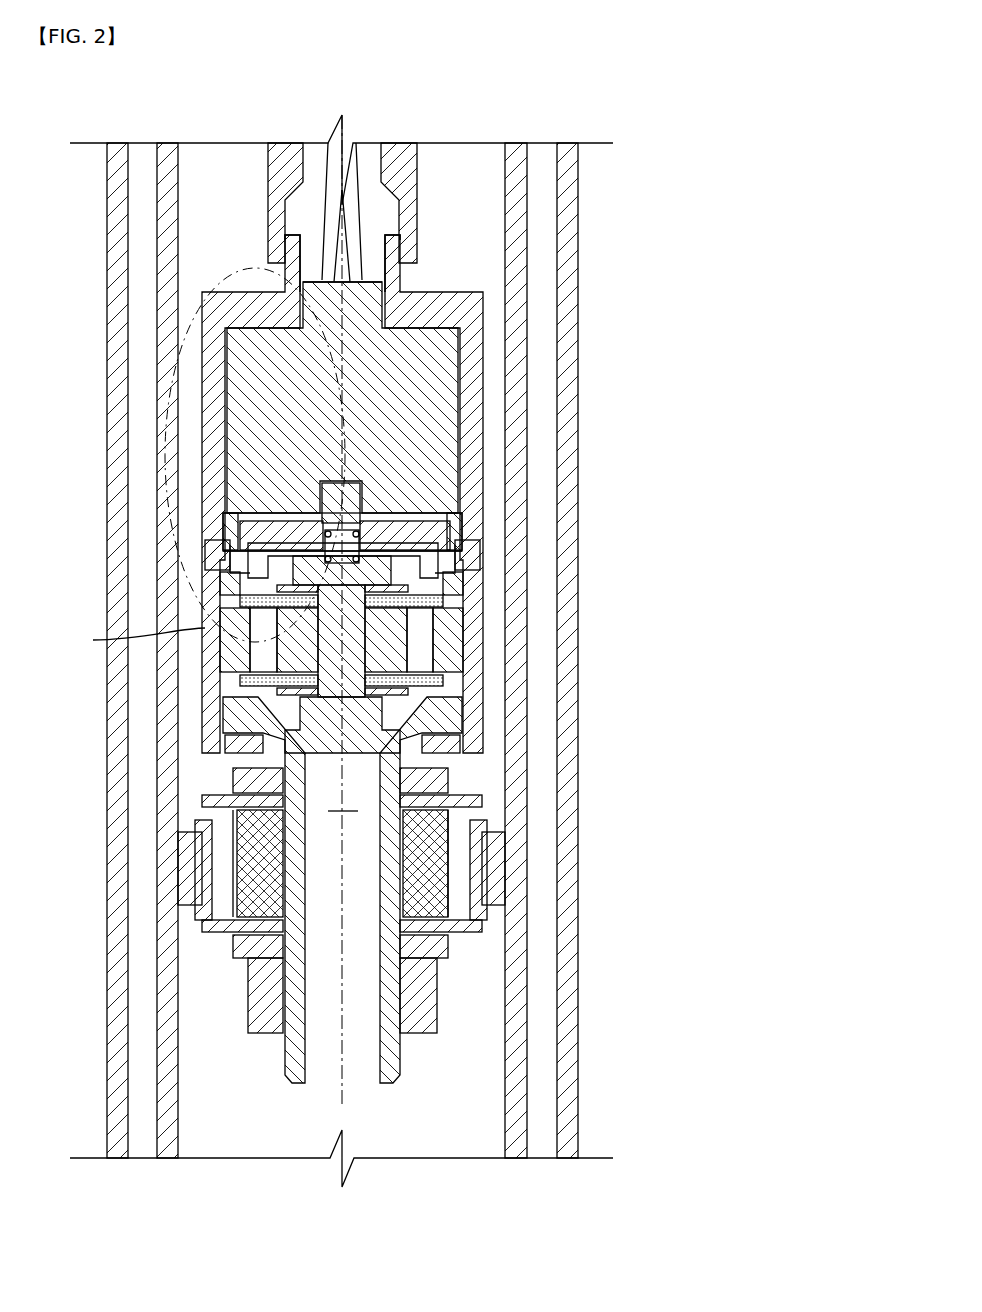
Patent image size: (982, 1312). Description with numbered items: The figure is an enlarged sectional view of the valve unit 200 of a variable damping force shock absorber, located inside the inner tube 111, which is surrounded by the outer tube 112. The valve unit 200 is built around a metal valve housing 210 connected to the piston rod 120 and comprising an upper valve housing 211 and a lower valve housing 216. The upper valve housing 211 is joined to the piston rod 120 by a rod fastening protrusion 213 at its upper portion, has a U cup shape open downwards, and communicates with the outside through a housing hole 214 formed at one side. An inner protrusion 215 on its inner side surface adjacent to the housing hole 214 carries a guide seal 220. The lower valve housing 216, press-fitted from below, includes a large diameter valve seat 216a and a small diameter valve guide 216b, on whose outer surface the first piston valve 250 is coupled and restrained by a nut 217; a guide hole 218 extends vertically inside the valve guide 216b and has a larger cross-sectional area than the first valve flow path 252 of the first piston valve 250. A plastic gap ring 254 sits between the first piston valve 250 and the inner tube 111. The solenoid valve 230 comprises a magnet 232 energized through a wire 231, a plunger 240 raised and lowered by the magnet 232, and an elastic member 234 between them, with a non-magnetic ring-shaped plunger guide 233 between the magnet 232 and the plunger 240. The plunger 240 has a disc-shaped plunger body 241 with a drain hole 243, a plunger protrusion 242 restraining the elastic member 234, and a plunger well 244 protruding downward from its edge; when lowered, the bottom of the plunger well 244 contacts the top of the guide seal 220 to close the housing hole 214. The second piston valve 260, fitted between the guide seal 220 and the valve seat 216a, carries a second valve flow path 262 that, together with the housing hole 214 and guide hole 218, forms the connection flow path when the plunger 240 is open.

The valve unit 200 is at (408, 641).
The inner tube 111 is at (510, 162).
The outer tube 112 is at (558, 162).
The piston rod 120 is at (405, 150).
The wire 231 is at (358, 212).
The rod fastening protrusion 213 is at (398, 275).
The upper valve housing 211 is at (475, 355).
The valve housing 210 is at (408, 613).
The magnet 232 is at (440, 410).
The solenoid valve 230 is at (431, 353).
The elastic member 234 is at (355, 530).
The plunger body 241 is at (268, 520).
The plunger protrusion 242 is at (227, 513).
The drain hole 243 is at (225, 540).
The plunger guide 233 is at (474, 536).
The plunger 240 is at (480, 546).
The housing hole 214 is at (222, 565).
The inner protrusion 215 is at (228, 572).
The guide seal 220 is at (218, 593).
The plunger well 244 is at (440, 580).
The second piston valve 260 is at (470, 612).
The second valve flow path 262 is at (414, 636).
The lower valve housing 216 is at (471, 834).
The valve seat 216a is at (450, 725).
The valve guide 216b is at (440, 785).
The first piston valve 250 is at (494, 823).
The gap ring 254 is at (488, 852).
The first valve flow path 252 is at (454, 891).
The nut 217 is at (430, 985).
The guide hole 218 is at (356, 1006).